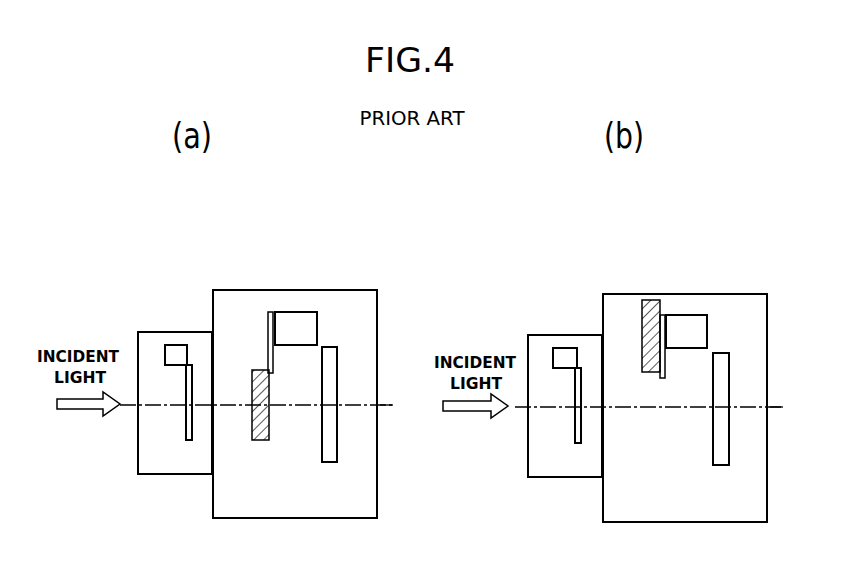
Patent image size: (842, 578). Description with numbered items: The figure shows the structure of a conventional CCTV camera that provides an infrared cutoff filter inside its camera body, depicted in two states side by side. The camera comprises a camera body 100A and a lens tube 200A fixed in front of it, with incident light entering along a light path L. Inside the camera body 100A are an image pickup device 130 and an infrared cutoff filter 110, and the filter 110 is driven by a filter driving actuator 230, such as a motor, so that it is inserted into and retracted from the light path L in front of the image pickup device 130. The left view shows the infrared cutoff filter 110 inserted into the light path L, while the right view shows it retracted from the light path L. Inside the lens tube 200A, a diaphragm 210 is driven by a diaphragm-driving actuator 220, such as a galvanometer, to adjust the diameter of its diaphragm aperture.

The camera body 100A is at (303, 280).
The lens tube 200A is at (185, 322).
The infrared cutoff filter 110 is at (255, 441).
The image pickup device 130 is at (325, 463).
The diaphragm 210 is at (185, 420).
The diaphragm-driving actuator 220 is at (168, 332).
The filter driving actuator 230 is at (311, 312).
The light path L is at (388, 405).